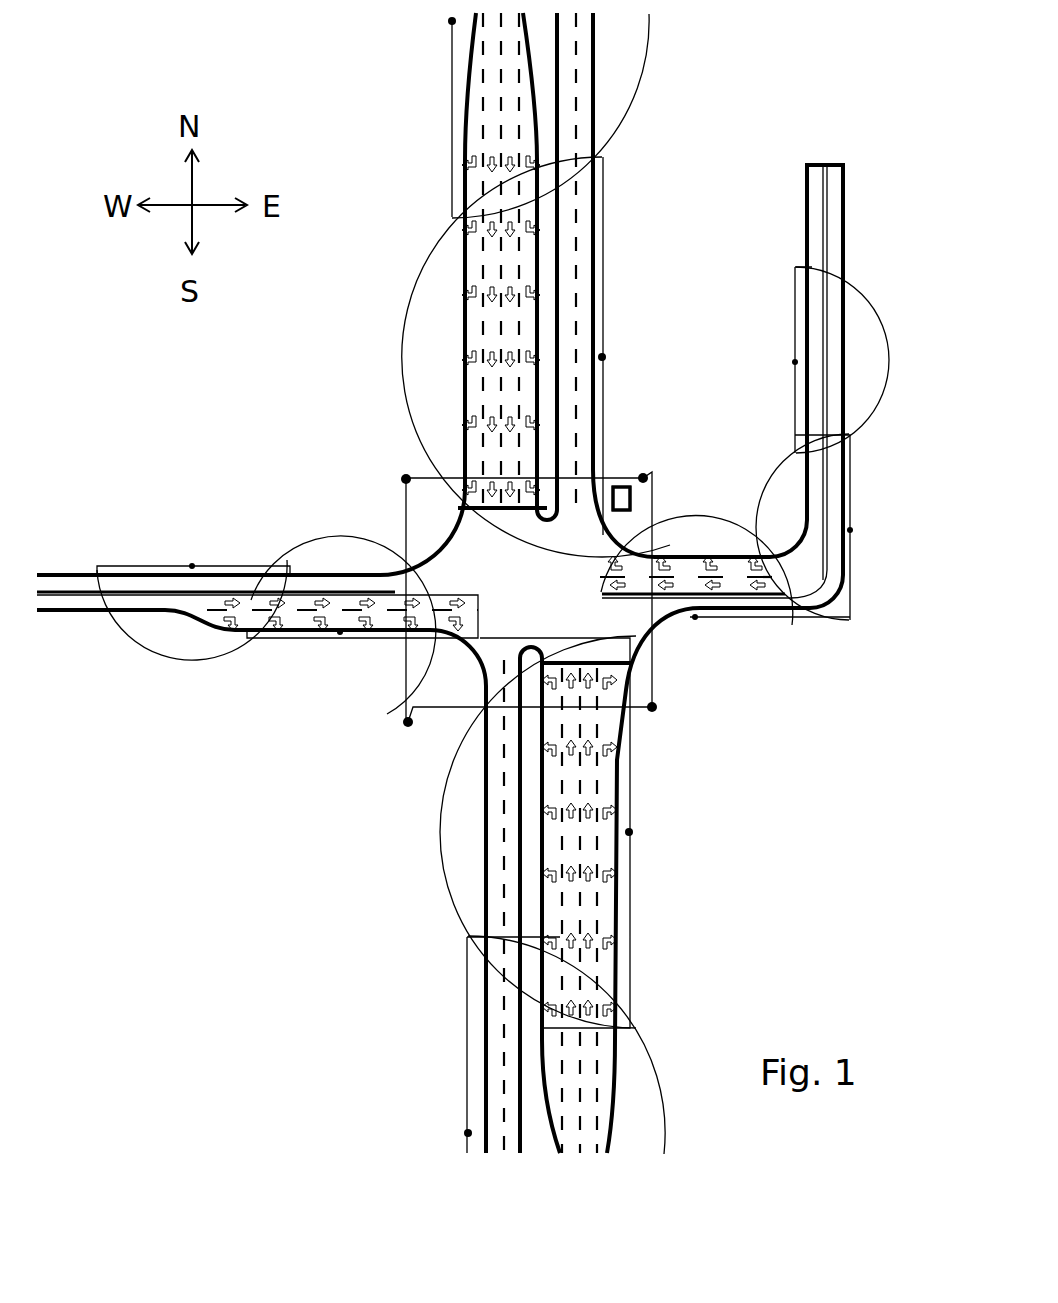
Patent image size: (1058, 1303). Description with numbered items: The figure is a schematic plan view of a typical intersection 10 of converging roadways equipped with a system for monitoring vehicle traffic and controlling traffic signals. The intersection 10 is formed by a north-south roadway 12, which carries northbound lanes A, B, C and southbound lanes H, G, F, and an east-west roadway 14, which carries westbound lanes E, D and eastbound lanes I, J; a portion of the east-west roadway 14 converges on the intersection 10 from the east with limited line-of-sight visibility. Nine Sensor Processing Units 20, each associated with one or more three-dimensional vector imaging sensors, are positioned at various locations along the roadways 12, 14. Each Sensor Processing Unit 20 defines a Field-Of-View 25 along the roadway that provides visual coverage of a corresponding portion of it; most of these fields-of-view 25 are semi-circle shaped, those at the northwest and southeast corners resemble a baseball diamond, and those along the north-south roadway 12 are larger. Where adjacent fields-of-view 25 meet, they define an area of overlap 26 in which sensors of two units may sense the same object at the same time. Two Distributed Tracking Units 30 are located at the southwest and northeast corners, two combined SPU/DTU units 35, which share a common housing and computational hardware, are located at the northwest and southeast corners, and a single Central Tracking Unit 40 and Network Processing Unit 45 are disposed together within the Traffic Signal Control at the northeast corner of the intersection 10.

The intersection 10 is at (390, 528).
The north-south roadway 12 is at (610, 1158).
The east-west roadway 14 is at (848, 162).
The Sensor Processing Unit 20 is at (463, 582).
The Field-Of-View 25 is at (628, 59).
The area of overlap 26 is at (496, 199).
The Distributed Tracking Unit 30 is at (500, 596).
The SPU combined with a DTU 35 is at (537, 593).
The Central Tracking Unit 40 is at (665, 476).
The Network Processing Unit 45 is at (665, 471).